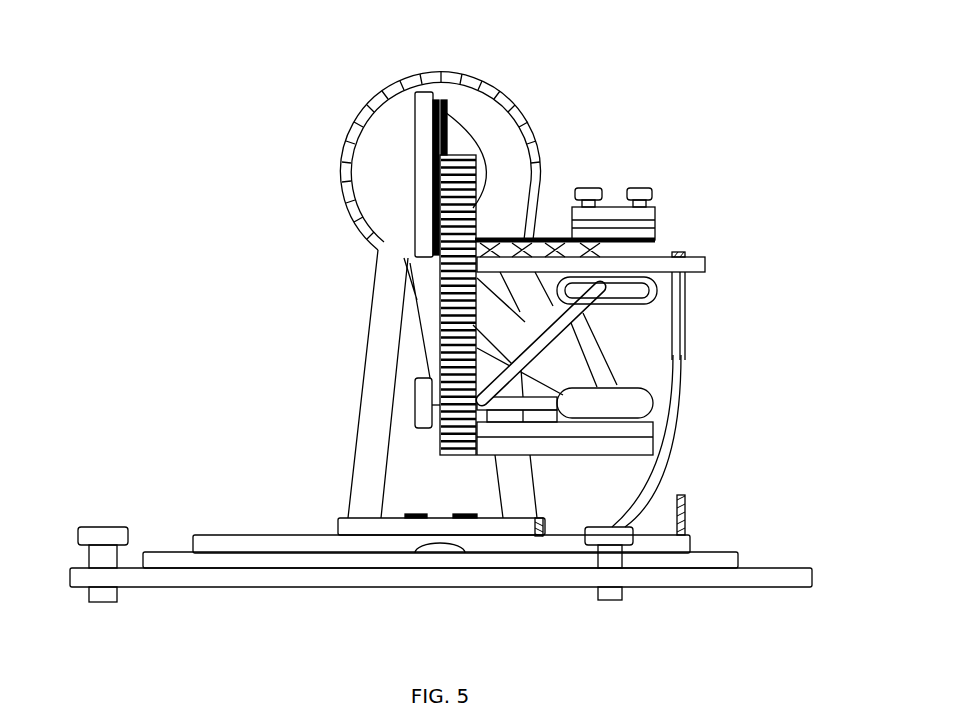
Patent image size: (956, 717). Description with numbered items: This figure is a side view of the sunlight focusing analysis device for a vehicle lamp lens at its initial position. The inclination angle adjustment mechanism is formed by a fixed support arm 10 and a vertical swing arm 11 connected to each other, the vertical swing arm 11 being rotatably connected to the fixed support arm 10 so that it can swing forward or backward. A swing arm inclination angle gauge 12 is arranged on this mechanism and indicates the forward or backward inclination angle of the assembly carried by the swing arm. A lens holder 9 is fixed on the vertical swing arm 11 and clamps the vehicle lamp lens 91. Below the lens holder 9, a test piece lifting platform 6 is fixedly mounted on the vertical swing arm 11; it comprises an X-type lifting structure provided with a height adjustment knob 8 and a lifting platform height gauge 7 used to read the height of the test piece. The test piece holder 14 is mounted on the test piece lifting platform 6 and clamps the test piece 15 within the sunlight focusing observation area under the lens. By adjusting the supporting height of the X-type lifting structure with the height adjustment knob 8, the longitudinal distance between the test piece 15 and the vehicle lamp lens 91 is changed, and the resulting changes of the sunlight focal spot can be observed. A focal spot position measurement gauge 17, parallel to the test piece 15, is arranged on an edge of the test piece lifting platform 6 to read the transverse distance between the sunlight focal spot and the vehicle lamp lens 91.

The test piece lifting platform 6 is at (602, 340).
The lifting platform height gauge 7 is at (438, 338).
The height adjustment knob 8 is at (415, 402).
The lens holder 9 is at (412, 183).
The fixed support arm 10 is at (378, 262).
The vertical swing arm 11 is at (420, 298).
The swing arm inclination angle gauge 12 is at (347, 135).
The test piece holder 14 is at (610, 203).
The test piece 15 is at (498, 238).
The focal spot position measurement gauge 17 is at (612, 258).
The vehicle lamp lens 91 is at (487, 150).